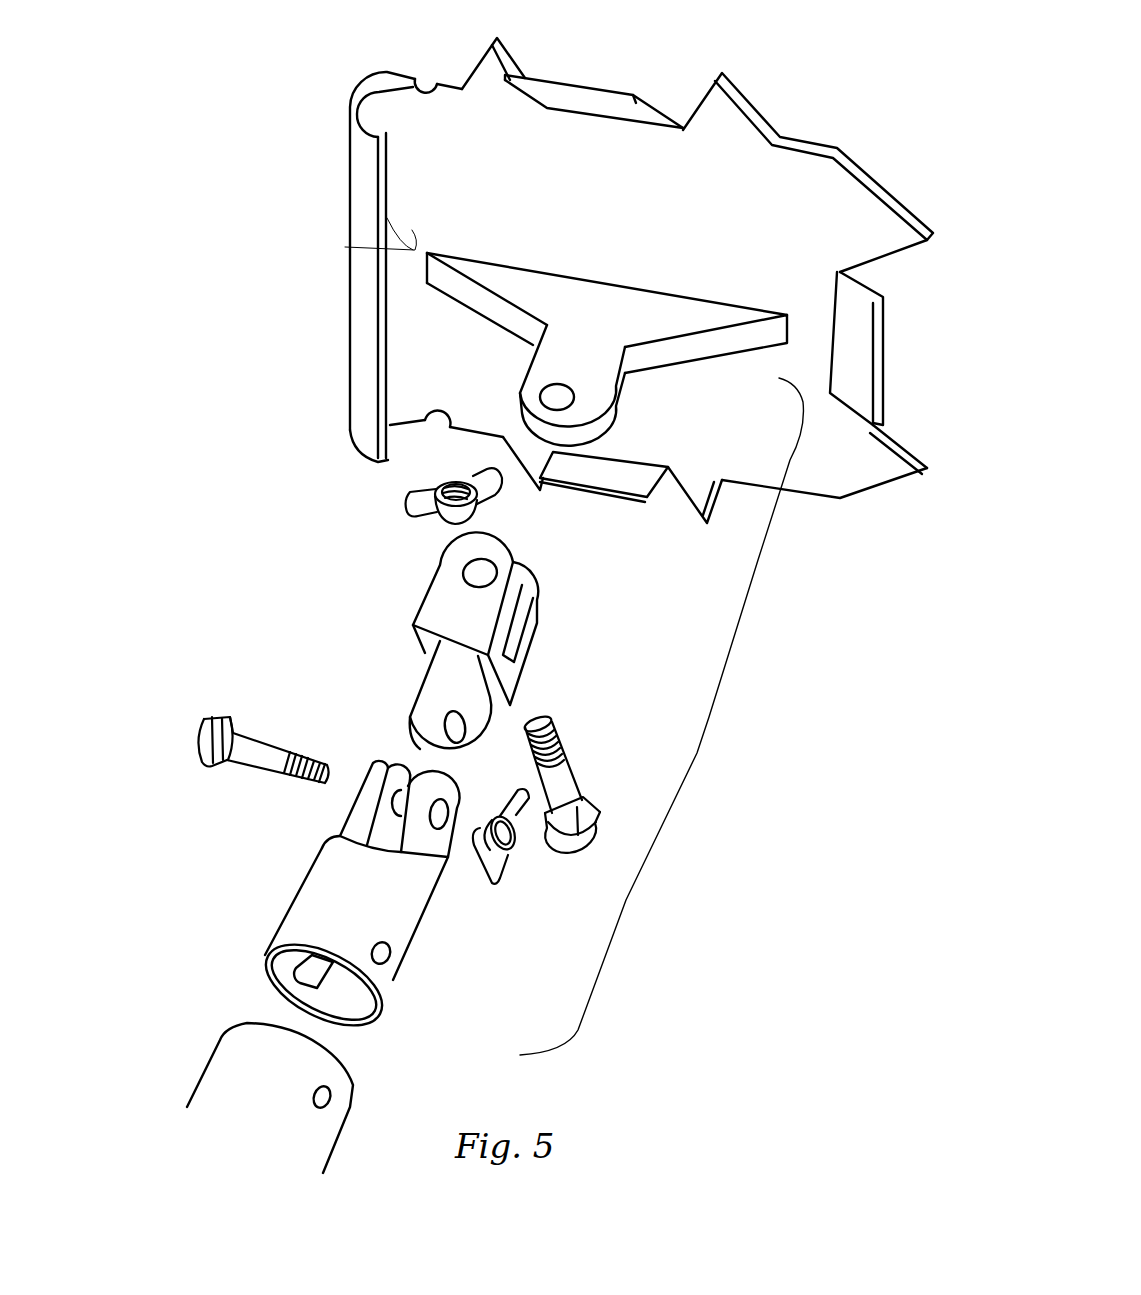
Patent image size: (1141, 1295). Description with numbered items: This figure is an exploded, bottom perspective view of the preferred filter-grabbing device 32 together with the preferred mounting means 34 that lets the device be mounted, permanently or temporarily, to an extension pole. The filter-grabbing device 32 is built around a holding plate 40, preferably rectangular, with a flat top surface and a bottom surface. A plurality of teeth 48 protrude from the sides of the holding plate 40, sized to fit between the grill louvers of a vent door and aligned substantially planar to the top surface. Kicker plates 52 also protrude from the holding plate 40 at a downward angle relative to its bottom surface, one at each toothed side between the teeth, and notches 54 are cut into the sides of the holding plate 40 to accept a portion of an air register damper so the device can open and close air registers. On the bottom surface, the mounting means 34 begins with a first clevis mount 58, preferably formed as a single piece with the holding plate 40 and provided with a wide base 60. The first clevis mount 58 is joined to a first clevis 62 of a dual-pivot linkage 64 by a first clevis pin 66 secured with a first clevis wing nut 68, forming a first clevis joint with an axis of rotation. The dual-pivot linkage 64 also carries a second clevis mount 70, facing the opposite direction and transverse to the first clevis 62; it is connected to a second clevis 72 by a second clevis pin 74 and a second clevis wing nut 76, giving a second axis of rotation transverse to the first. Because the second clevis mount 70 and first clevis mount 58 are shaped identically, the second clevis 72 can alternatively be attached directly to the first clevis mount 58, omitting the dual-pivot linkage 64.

The filter-grabbing device 32 is at (335, 350).
The mounting means 34 is at (661, 716).
The holding plate 40 is at (640, 203).
The teeth 48 is at (507, 48).
The kicker plates 52 is at (580, 92).
The notches 54 is at (430, 84).
The first clevis mount 58 is at (587, 375).
The base 60 is at (617, 290).
The first clevis 62 is at (477, 623).
The dual-pivot linkage 64 is at (400, 630).
The first clevis pin 66 is at (567, 777).
The first clevis wing nut 68 is at (417, 510).
The second clevis mount 70 is at (478, 711).
The second clevis 72 is at (348, 916).
The second clevis pin 74 is at (260, 747).
The second clevis wing nut 76 is at (515, 842).